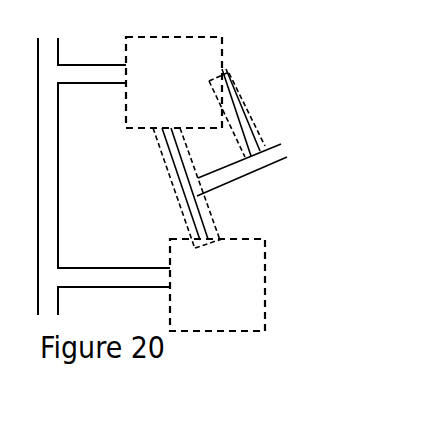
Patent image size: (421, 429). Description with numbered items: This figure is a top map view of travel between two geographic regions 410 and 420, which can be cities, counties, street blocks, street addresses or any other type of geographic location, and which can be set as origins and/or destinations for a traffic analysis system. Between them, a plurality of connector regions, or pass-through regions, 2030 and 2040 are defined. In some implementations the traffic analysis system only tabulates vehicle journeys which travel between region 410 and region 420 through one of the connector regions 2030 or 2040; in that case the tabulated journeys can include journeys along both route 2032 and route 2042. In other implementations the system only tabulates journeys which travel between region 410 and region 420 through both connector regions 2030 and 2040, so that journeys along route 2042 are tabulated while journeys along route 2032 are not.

The geographic region 420 is at (190, 95).
The geographic region 410 is at (237, 298).
The connector region 2030 is at (179, 193).
The route 2032 is at (167, 150).
The connector region 2040 is at (240, 96).
The route 2042 is at (256, 169).